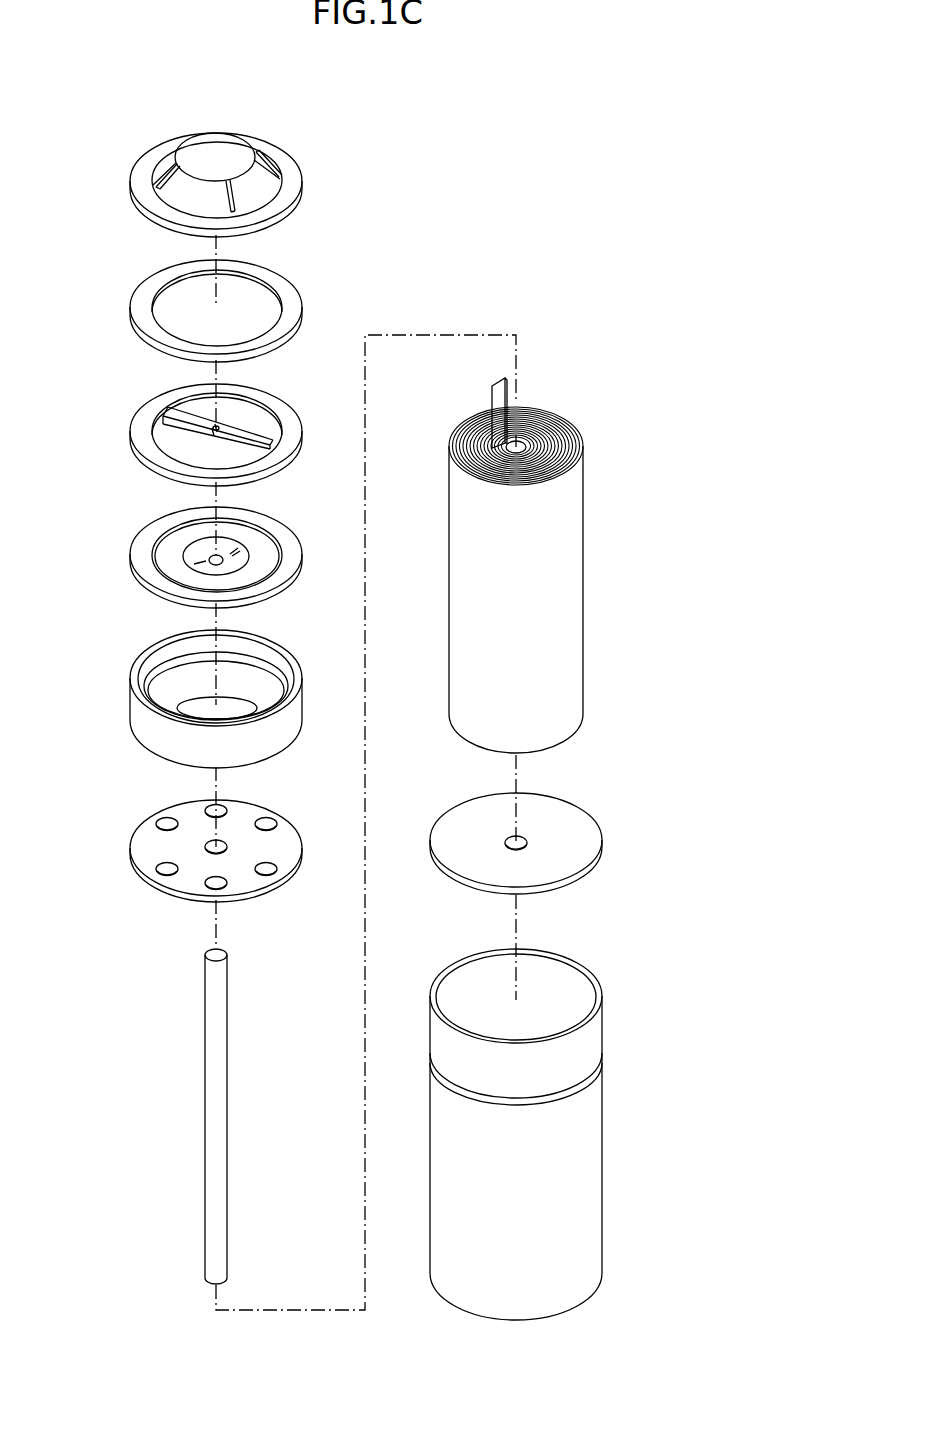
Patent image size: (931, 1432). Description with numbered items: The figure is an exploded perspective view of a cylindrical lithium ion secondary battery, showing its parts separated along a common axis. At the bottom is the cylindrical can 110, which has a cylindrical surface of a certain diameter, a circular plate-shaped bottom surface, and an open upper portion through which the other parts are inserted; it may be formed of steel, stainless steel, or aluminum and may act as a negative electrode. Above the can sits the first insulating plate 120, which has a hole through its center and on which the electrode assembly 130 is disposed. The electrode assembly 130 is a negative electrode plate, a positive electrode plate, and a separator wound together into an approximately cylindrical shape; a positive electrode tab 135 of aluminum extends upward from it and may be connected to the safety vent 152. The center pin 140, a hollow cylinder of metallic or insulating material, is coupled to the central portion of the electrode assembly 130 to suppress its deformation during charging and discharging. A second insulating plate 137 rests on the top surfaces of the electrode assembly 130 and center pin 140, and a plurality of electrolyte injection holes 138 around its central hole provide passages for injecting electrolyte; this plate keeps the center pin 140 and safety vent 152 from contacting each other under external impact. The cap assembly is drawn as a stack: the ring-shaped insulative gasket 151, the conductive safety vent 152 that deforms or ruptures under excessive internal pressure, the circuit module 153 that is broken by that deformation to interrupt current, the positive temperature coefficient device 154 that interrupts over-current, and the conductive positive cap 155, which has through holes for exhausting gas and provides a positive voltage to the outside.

The cylindrical can 110 is at (600, 1157).
The first insulating plate 120 is at (600, 840).
The electrode assembly 130 is at (546, 547).
The positive electrode tab 135 is at (500, 380).
The second insulating plate 137 is at (187, 857).
The electrolyte injection holes 138 is at (160, 876).
The center pin 140 is at (210, 1110).
The insulative gasket 151 is at (134, 710).
The safety vent 152 is at (134, 553).
The circuit module 153 is at (134, 430).
The positive temperature coefficient (PTC) device 154 is at (134, 306).
The positive cap 155 is at (134, 180).